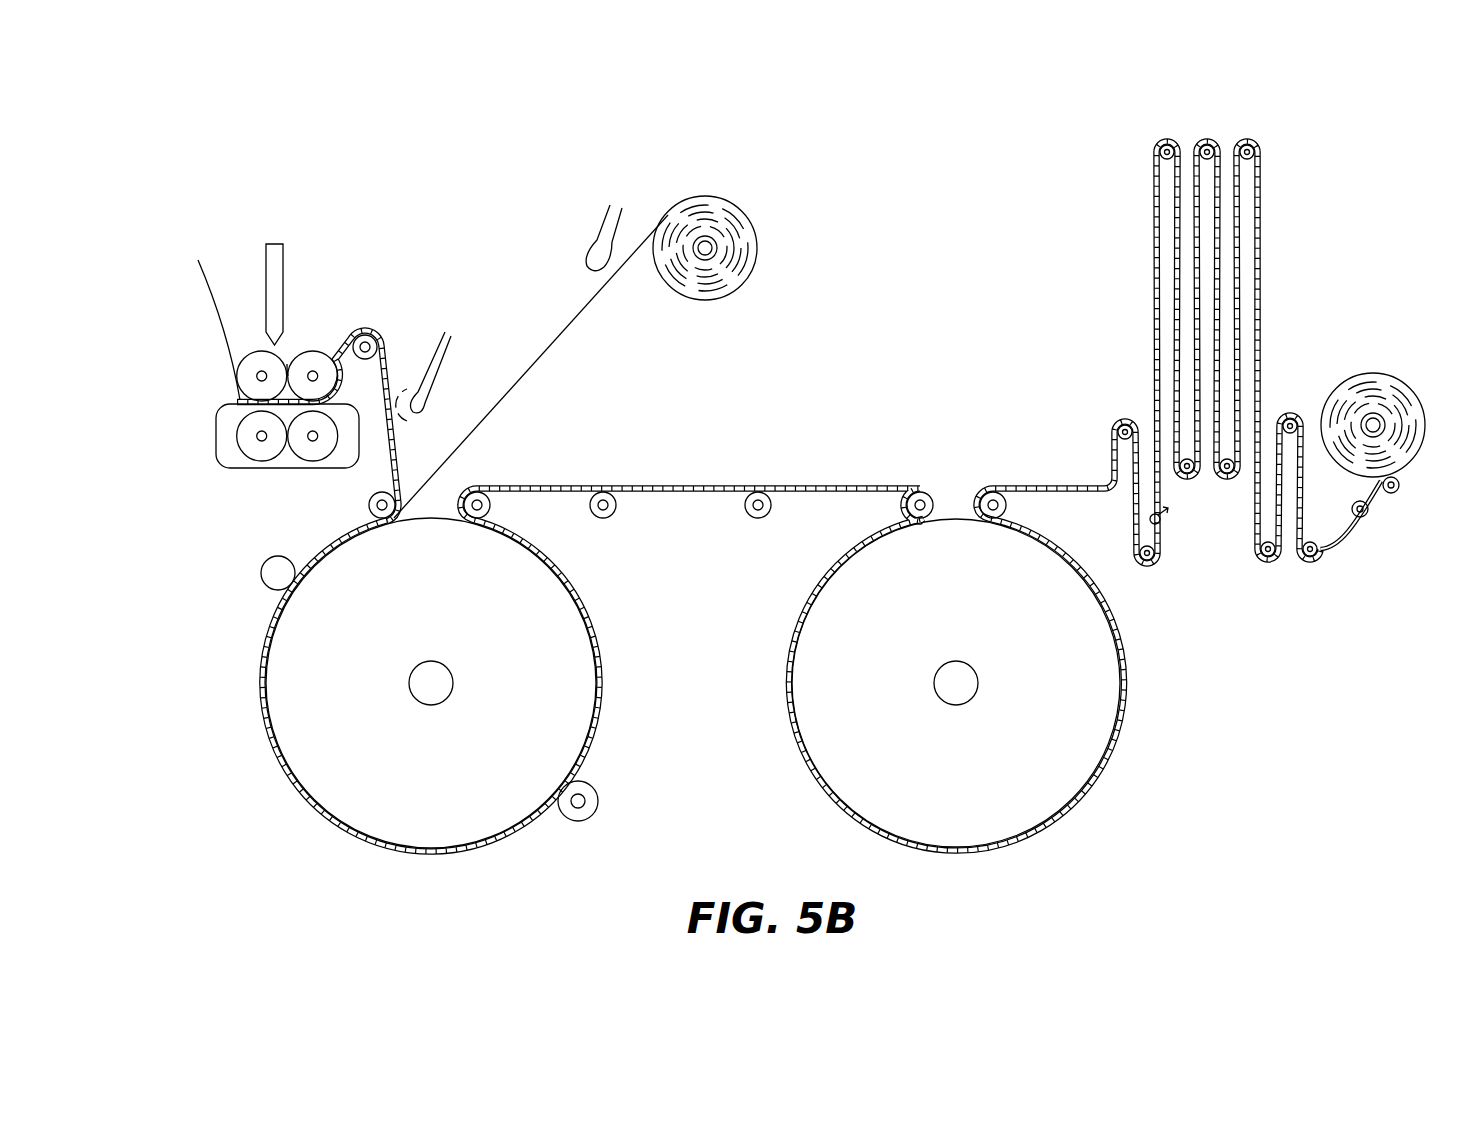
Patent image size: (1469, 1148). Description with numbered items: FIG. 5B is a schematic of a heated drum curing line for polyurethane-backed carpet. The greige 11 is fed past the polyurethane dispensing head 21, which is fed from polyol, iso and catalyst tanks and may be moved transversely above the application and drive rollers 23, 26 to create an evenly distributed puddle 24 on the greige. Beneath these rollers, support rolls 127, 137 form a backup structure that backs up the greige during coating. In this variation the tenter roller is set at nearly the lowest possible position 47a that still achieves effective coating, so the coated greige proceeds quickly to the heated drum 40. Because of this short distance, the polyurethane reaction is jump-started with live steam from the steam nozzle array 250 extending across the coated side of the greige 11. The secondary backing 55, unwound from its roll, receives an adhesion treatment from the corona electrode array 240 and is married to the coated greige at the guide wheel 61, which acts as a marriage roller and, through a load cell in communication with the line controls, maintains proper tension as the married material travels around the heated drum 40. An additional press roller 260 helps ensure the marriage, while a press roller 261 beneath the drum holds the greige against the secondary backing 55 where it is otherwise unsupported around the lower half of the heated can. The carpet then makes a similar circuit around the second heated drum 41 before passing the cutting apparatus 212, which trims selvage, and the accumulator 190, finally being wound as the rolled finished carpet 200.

The greige 11 is at (213, 293).
The polyurethane dispensing head 21 is at (275, 242).
The application and drive roller 23 is at (250, 362).
The puddle 24 is at (284, 356).
The application and drive roller 26 is at (325, 367).
The support roll 137 is at (245, 438).
The support roll 127 is at (303, 443).
The lowest tenter roller position 47a is at (393, 337).
The steam nozzle array 250 is at (447, 350).
The corona electrode array 240 is at (600, 223).
The secondary backing 55 is at (705, 196).
The guide wheel 61 is at (370, 509).
The press roller 260 is at (262, 577).
The press roller 261 is at (599, 803).
The heated drum 40 is at (530, 700).
The heated drum 41 is at (1057, 700).
The accumulator 190 is at (1212, 137).
The cutting apparatus 212 is at (1163, 520).
The rolled finished carpet 200 is at (1379, 379).